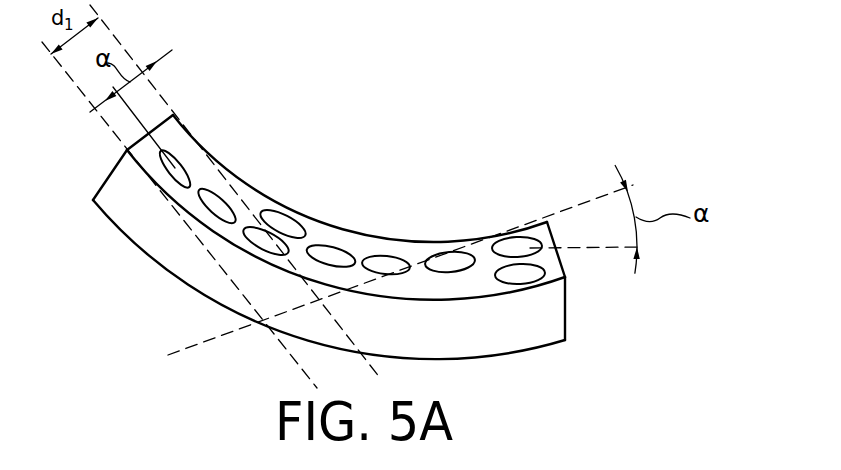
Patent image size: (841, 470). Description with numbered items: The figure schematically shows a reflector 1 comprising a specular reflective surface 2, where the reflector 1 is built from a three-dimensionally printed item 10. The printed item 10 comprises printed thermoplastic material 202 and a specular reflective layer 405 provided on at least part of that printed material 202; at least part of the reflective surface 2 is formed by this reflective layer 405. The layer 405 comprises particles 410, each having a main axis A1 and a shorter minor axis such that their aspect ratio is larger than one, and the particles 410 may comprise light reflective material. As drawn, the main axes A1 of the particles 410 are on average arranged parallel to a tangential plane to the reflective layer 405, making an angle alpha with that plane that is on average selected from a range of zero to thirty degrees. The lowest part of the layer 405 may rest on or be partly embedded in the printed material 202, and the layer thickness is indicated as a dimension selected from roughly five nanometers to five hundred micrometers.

The reflector 1 is at (603, 98).
The specular reflective surface 2 is at (447, 212).
The 3D printed item 10 is at (637, 342).
The 3D printed material 202 is at (545, 313).
The reflective layer 405 is at (258, 121).
The particles 410 is at (218, 208).
The main axis A1 is at (175, 169).